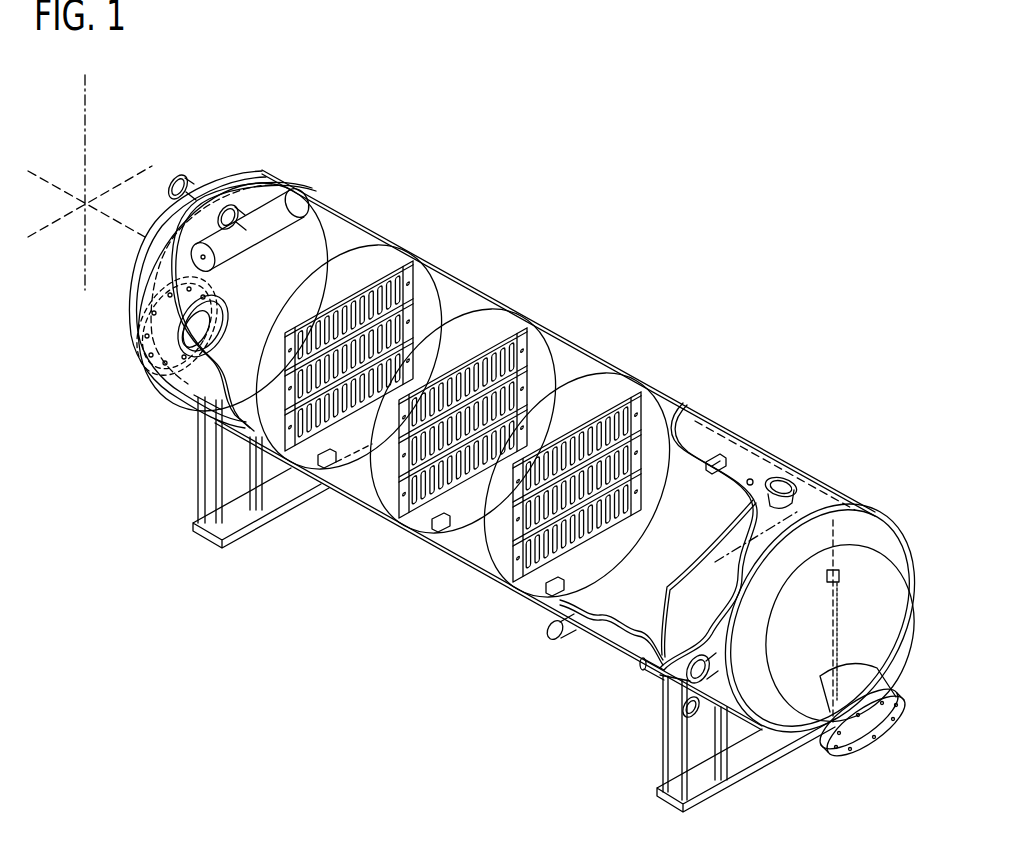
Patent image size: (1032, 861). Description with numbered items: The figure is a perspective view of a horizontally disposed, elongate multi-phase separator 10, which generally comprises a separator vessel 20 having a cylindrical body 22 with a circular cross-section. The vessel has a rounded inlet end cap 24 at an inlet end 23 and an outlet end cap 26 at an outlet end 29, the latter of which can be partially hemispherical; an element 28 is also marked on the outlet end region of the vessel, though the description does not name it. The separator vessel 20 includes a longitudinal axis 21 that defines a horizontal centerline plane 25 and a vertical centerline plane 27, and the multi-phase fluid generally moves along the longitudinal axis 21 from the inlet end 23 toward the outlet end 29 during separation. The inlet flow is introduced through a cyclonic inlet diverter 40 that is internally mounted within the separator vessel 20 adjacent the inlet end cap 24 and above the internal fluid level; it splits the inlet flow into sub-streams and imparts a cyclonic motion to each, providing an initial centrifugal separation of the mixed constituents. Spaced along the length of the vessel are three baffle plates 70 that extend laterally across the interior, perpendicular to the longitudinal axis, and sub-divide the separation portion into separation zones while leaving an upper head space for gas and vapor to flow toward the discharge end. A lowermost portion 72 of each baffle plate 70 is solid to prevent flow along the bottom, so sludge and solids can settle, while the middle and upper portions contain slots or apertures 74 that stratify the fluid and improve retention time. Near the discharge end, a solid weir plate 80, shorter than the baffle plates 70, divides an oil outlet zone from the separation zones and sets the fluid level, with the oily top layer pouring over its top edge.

The multi-phase separator 10 is at (638, 191).
The separator vessel 20 is at (699, 377).
The longitudinal axis 21 is at (48, 183).
The cylindrical body 22 is at (607, 650).
The inlet end 23 is at (122, 374).
The inlet end cap 24 is at (210, 187).
The horizontal centerline plane 25 is at (125, 180).
The outlet end cap 26 is at (494, 294).
The vertical centerline plane 27 is at (85, 98).
The second head 28 is at (932, 690).
The outlet end 29 is at (795, 769).
The cyclonic inlet diverter 40 is at (290, 212).
The baffle plates 70 is at (267, 403).
The lowermost portion 72 is at (330, 490).
The slots or apertures 74 is at (383, 303).
The weir plate 80 is at (680, 603).